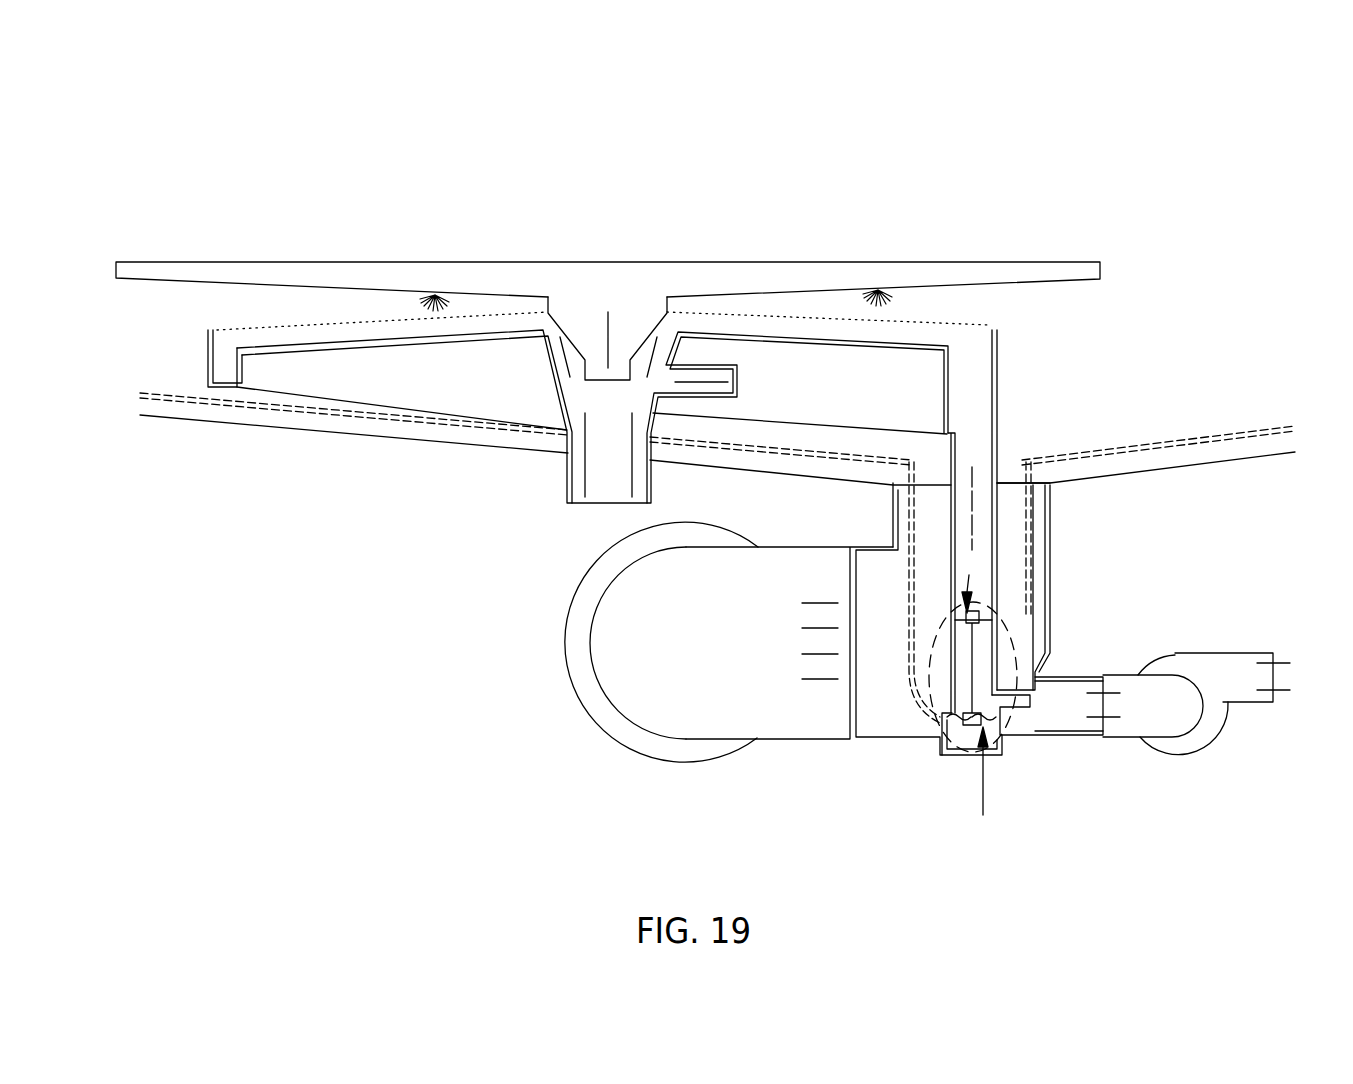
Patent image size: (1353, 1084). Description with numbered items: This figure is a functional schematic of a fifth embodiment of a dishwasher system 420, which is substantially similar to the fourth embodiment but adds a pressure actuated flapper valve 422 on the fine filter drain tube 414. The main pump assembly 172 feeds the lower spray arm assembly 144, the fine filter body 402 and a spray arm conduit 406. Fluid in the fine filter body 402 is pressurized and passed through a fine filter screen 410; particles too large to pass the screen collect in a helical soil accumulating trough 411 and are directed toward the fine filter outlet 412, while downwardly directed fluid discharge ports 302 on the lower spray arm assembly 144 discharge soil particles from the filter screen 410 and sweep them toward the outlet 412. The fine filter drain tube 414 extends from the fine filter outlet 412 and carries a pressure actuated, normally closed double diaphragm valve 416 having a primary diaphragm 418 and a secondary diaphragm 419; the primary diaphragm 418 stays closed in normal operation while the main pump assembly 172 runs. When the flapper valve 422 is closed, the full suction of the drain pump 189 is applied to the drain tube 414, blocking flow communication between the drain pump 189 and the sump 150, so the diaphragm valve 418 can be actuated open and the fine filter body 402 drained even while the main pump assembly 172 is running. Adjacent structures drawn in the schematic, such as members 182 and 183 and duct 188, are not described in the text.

The lower spray arm assembly 144 is at (618, 262).
The fluid discharge ports 302 is at (435, 295).
The dishwasher system 420 is at (997, 130).
The fine filter screen 410 is at (933, 325).
The helical soil accumulating trough 411 is at (210, 372).
The fine filter body 402 is at (836, 345).
The spray arm conduit 406 is at (723, 388).
The fine filter outlet 412 is at (975, 388).
The fine filter drain tube 414 is at (1000, 480).
The frame member 182 is at (410, 420).
The main pump assembly 172 is at (690, 658).
The flow conduit 183 is at (910, 650).
The sump 150 is at (899, 755).
The primary diaphragm 418 is at (970, 570).
The double diaphragm valve 416 is at (1013, 637).
The flapper valve 422 is at (1032, 723).
The secondary diaphragm 419 is at (971, 778).
The connecting duct 188 is at (1070, 728).
The drain pump 189 is at (1175, 719).